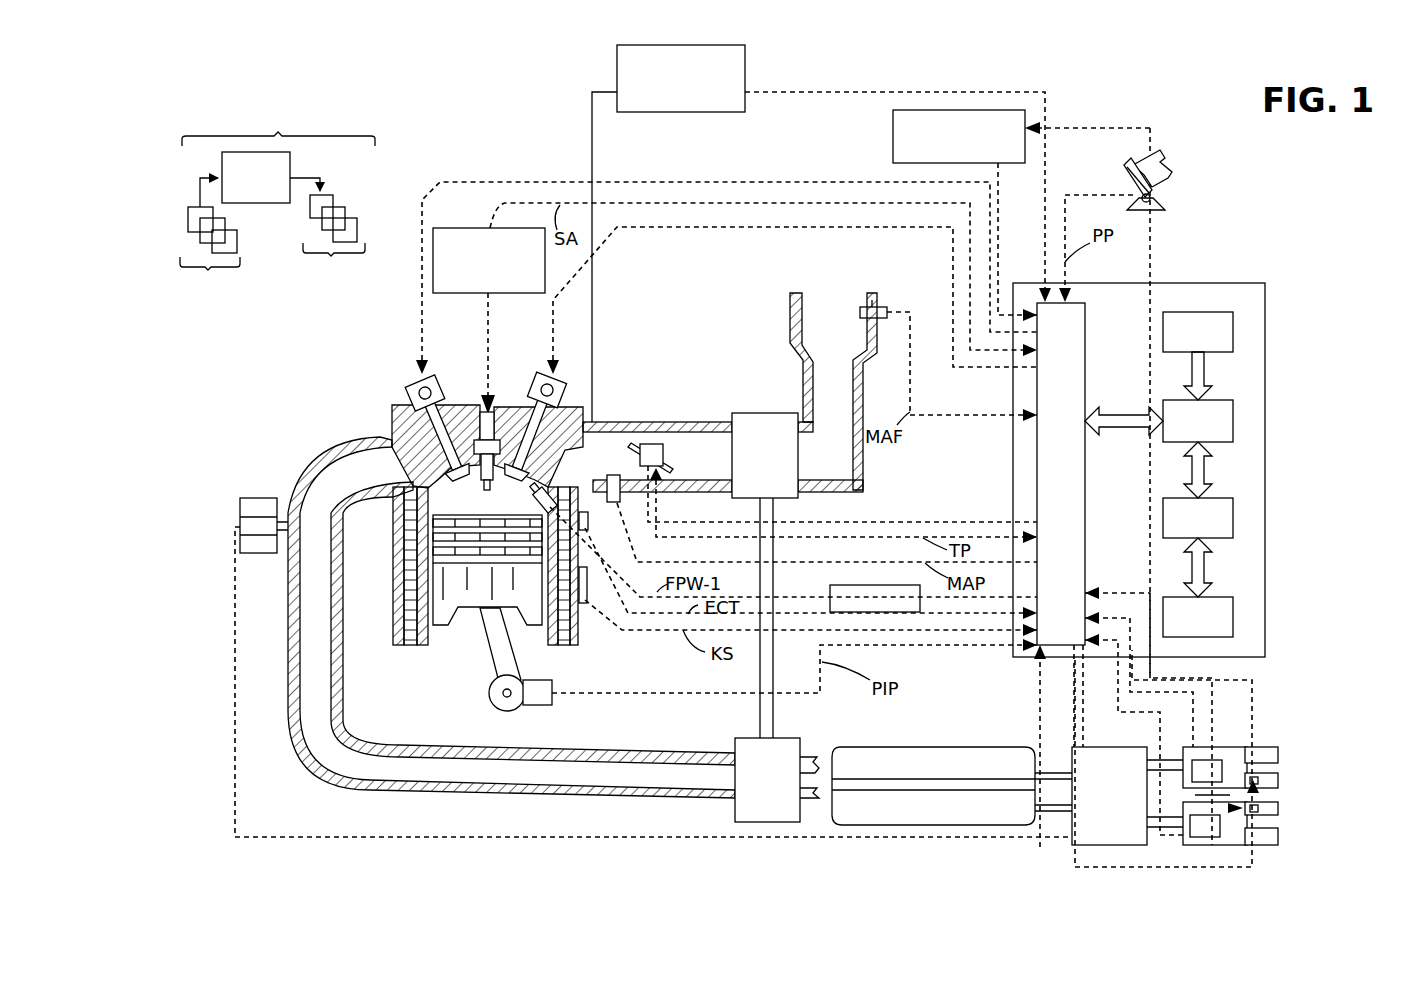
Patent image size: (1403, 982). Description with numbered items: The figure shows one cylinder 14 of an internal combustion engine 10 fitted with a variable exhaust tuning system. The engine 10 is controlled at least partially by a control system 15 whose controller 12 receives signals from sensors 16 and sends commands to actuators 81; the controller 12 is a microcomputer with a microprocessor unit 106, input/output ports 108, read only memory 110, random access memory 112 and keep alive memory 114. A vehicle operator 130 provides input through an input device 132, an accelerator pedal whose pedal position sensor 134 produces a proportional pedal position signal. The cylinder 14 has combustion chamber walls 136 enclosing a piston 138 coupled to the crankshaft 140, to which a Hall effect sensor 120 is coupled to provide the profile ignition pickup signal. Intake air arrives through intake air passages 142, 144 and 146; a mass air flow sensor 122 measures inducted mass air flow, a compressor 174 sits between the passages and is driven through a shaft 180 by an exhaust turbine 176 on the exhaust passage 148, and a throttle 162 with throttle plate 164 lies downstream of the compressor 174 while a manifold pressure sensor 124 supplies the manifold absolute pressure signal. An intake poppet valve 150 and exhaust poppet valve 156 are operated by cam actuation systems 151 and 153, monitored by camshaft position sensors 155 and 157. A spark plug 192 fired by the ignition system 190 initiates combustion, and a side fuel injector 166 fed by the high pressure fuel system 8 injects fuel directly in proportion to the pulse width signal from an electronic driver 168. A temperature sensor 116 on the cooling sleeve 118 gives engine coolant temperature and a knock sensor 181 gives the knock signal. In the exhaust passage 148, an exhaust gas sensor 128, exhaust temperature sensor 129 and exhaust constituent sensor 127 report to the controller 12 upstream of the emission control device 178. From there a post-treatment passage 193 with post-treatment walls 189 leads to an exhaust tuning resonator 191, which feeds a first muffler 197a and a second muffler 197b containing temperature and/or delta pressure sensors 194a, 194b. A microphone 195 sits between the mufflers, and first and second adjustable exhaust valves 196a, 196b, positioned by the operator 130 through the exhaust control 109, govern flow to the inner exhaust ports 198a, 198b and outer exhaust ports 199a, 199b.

The high pressure fuel system 8 is at (745, 57).
The internal combustion engine 10 is at (508, 116).
The controller 12 is at (1225, 283).
The cylinder 14 is at (392, 520).
The control system 15 is at (280, 129).
The sensors 16 is at (174, 250).
The actuators 81 is at (341, 237).
The microprocessor unit 106 is at (1233, 415).
The input/output ports 108 is at (1085, 308).
The exhaust control 109 is at (990, 110).
The read only memory 110 is at (1233, 325).
The random access memory 112 is at (1233, 513).
The keep alive memory 114 is at (1233, 612).
The temperature sensor 116 is at (585, 530).
The cooling sleeve 118 is at (568, 645).
The Hall effect sensor 120 is at (540, 706).
The mass air flow sensor 122 is at (876, 303).
The manifold pressure sensor 124 is at (618, 503).
The exhaust constituent sensor 127 is at (240, 505).
The exhaust gas sensor 128 is at (240, 520).
The exhaust temperature sensor 129 is at (240, 540).
The vehicle operator 130 is at (1172, 160).
The input device 132 is at (1130, 170).
The pedal position sensor 134 is at (1160, 200).
The combustion chamber walls 136 is at (428, 640).
The piston 138 is at (470, 600).
The crankshaft 140 is at (495, 708).
The intake air passage 142 is at (833, 391).
The intake air passage 144 is at (723, 457).
The intake air passage 146 is at (610, 456).
The exhaust passage 148 is at (360, 461).
The intake poppet valve 150 is at (527, 415).
The cam actuation system 151 is at (540, 385).
The cam actuation system 153 is at (435, 385).
The camshaft position sensor 155 is at (560, 390).
The exhaust poppet valve 156 is at (425, 420).
The camshaft position sensor 157 is at (412, 388).
The throttle 162 is at (662, 457).
The throttle plate 164 is at (647, 444).
The fuel injector 166 is at (552, 489).
The electronic driver 168 is at (830, 590).
The compressor 174 is at (757, 413).
The exhaust turbine 176 is at (735, 815).
The emission control device 178 is at (1010, 749).
The shaft 180 is at (775, 700).
The knock sensor 181 is at (585, 603).
The post-treatment walls 189 is at (1055, 838).
The ignition system 190 is at (440, 228).
The exhaust tuning resonator 191 is at (1090, 747).
The spark plug 192 is at (482, 430).
The post-treatment passage 193 is at (1054, 792).
The first temperature sensor and/or delta pressure sensor 194a is at (1205, 760).
The second temperature sensor and/or delta pressure sensor 194b is at (1195, 837).
The microphone 195 is at (1207, 796).
The first adjustable exhaust valve 196a is at (1278, 755).
The second adjustable exhaust valve 196b is at (1262, 817).
The first muffler 197a is at (1193, 747).
The second muffler 197b is at (1247, 840).
The first muffler inner exhaust port 198a is at (1260, 779).
The second muffler inner exhaust port 198b is at (1278, 808).
The first muffler outer exhaust port 199a is at (1270, 747).
The second muffler outer exhaust port 199b is at (1278, 833).